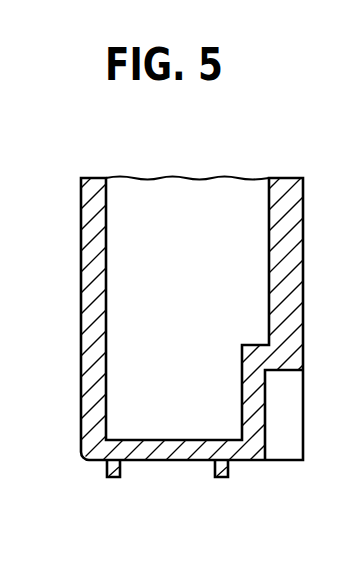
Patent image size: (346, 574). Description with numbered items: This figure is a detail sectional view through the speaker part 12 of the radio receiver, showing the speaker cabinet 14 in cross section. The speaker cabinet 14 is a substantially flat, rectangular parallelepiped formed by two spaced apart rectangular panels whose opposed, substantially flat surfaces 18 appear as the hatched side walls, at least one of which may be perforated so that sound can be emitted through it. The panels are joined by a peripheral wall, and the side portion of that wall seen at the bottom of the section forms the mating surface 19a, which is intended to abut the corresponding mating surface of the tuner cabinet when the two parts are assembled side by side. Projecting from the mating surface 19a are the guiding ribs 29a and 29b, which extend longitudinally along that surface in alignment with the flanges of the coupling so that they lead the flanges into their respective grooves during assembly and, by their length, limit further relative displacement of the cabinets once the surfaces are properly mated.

The speaker part 12 is at (200, 170).
The speaker cabinet 14 is at (306, 216).
The substantially flat surfaces 18 is at (81, 272).
The mating surface 19a is at (171, 460).
The guiding rib 29a is at (115, 477).
The guiding rib 29b is at (255, 515).